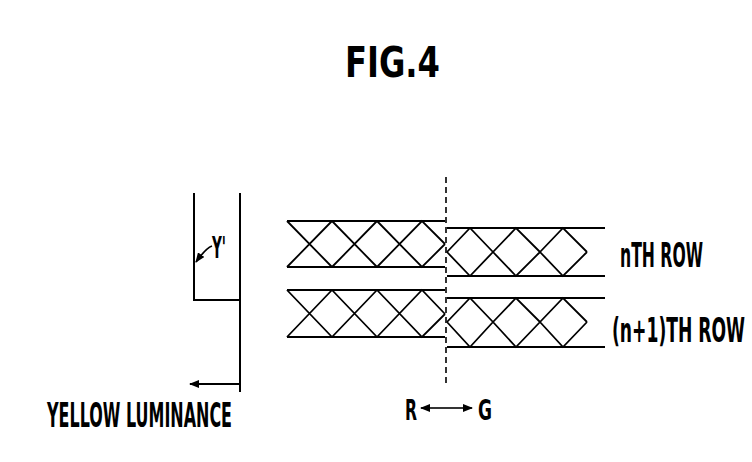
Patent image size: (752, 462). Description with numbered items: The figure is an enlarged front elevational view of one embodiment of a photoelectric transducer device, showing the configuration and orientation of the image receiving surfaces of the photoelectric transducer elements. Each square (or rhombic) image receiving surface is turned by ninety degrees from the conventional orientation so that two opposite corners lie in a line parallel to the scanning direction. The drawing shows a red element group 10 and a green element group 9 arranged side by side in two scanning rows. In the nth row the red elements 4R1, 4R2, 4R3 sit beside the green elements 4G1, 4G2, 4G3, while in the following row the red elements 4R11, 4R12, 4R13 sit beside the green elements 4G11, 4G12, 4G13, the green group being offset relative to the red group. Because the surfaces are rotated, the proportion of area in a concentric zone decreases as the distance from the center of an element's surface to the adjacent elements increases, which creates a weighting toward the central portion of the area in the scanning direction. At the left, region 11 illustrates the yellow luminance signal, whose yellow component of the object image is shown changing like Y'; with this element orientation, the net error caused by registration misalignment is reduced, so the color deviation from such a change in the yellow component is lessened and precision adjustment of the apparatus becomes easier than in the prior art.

The green subpixel group 9 is at (602, 180).
The red subpixel group 10 is at (440, 180).
The yellow luminance signal block 11 is at (250, 180).
The red subpixel 1 of nth row 4R1 is at (332, 227).
The red subpixel 2 of nth row 4R2 is at (375, 227).
The red subpixel 3 of nth row 4R3 is at (421, 227).
The green subpixel 1 of nth row 4G1 is at (470, 237).
The green subpixel 2 of nth row 4G2 is at (516, 237).
The green subpixel 3 of nth row 4G3 is at (563, 237).
The red subpixel 1 of (n+1)th row 4R11 is at (330, 333).
The red subpixel 2 of (n+1)th row 4R12 is at (375, 333).
The red subpixel 3 of (n+1)th row 4R13 is at (422, 333).
The green subpixel 1 of (n+1)th row 4G11 is at (475, 334).
The green subpixel 2 of (n+1)th row 4G12 is at (521, 334).
The green subpixel 3 of (n+1)th row 4G13 is at (563, 333).